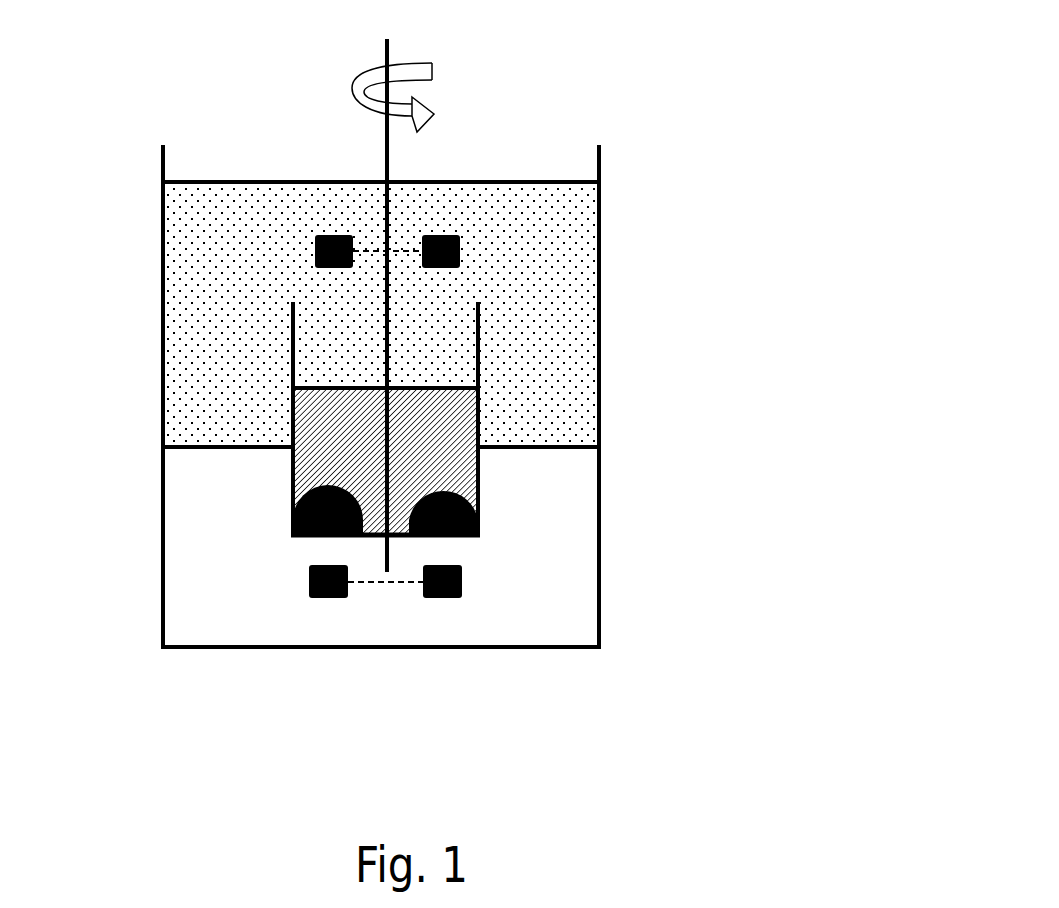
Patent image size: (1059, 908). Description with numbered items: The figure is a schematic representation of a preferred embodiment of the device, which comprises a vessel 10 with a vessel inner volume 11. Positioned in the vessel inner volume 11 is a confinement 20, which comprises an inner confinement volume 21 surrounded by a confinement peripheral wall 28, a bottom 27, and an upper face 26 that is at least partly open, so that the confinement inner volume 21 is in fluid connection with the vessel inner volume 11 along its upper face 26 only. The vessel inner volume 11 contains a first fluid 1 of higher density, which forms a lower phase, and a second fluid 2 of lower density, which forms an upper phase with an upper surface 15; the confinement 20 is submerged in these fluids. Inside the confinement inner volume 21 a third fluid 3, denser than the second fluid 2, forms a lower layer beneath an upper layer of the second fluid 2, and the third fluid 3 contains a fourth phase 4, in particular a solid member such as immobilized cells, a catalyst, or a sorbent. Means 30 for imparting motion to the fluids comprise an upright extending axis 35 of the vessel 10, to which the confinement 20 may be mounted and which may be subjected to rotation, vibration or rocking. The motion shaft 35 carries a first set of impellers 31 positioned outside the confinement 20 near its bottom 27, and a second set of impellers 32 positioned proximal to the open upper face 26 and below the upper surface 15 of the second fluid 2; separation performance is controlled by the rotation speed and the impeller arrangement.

The first fluid 1 is at (558, 580).
The second fluid 2 is at (515, 231).
The third fluid 3 is at (450, 427).
The fourth phase 4 is at (480, 520).
The vessel 10 is at (163, 558).
The vessel inner volume 11 is at (186, 276).
The upper surface of the second fluid 15 is at (465, 180).
The confinement 20 is at (290, 470).
The confinement inner volume 21 is at (305, 433).
The upper face 26 is at (435, 303).
The bottom 27 is at (307, 537).
The confinement peripheral wall 28 is at (480, 402).
The means for imparting motion 30 is at (447, 110).
The first set of impellers 31 is at (335, 235).
The second set of impellers 32 is at (462, 597).
The upright extending axis 35 is at (390, 53).